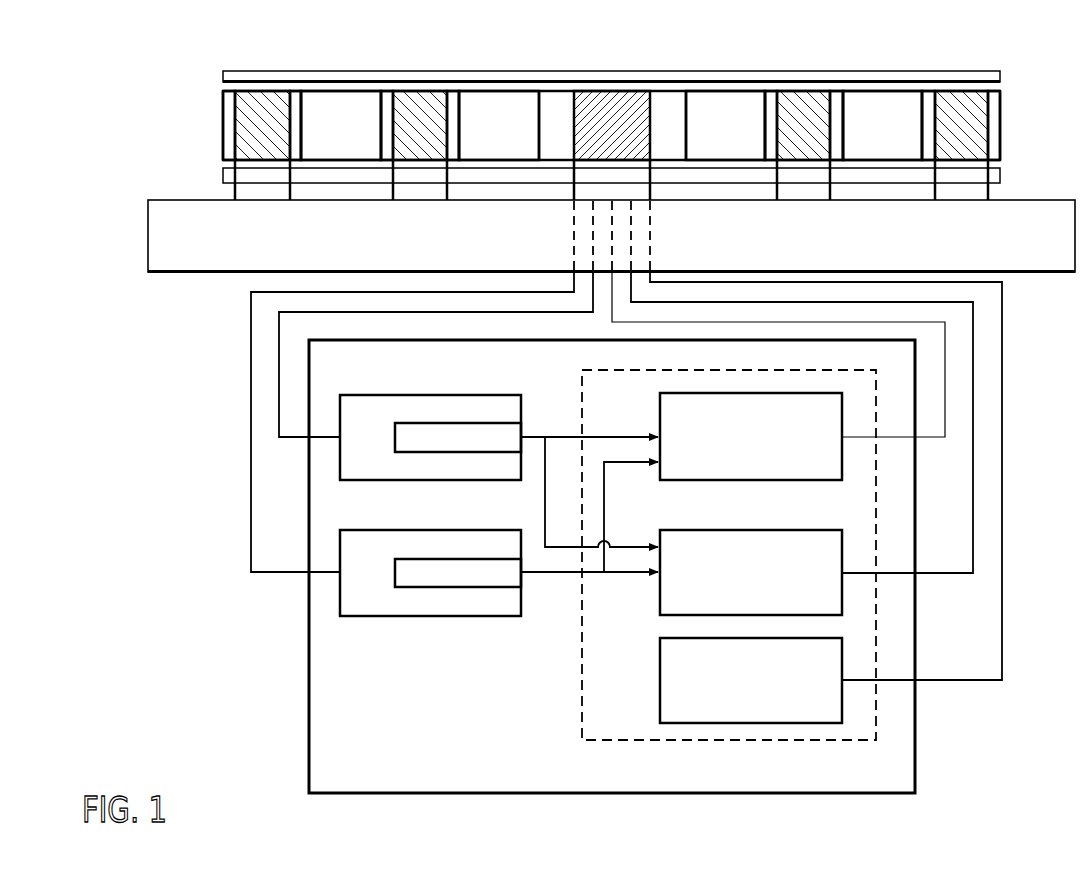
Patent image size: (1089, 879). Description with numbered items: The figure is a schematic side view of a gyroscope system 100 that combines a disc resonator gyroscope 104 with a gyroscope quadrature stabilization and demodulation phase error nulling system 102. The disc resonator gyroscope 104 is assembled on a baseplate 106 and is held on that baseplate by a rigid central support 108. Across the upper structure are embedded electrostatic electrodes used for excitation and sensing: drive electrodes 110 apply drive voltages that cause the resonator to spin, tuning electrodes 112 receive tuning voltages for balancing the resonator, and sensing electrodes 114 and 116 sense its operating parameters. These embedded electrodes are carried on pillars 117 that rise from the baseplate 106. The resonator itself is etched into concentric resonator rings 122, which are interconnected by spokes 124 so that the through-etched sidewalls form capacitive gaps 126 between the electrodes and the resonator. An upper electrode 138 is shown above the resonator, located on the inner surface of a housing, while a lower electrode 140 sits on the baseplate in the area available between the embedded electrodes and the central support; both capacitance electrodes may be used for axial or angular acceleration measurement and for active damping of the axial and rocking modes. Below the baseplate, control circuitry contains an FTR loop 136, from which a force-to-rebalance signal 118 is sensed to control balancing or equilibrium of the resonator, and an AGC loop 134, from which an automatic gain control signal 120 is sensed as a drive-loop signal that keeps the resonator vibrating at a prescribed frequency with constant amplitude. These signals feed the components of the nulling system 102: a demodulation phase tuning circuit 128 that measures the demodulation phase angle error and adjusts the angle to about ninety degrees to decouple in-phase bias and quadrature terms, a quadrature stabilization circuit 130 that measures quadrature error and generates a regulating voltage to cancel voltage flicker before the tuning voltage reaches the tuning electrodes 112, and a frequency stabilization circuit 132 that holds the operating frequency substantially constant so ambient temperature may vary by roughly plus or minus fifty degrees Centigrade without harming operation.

The gyroscope system 100 is at (203, 350).
The gyroscope quadrature stabilization and demodulation phase error nulling system 102 is at (581, 681).
The disc resonator gyroscope 104 is at (203, 141).
The baseplate 106 is at (147, 236).
The central support 108 is at (609, 90).
The drive electrodes 110 is at (268, 90).
The tuning electrodes 112 is at (418, 90).
The sensing electrodes 114 is at (808, 90).
The sensing electrodes 116 is at (972, 90).
The pillars 117 is at (233, 192).
The force-to-rebalance (FTR) signal 118 is at (456, 423).
The automatic gain control (AGC) signal 120 is at (456, 559).
The resonator rings 122 is at (222, 110).
The spokes 124 is at (343, 90).
The capacitive gaps 126 is at (229, 90).
The demodulation phase tuning circuit 128 is at (756, 481).
The quadrature stabilization circuit 130 is at (730, 530).
The frequency stabilization circuit 132 is at (659, 688).
The AGC loop 134 is at (392, 530).
The FTR loop 136 is at (392, 395).
The upper electrode 138 is at (1002, 76).
The lower electrode 140 is at (1002, 176).